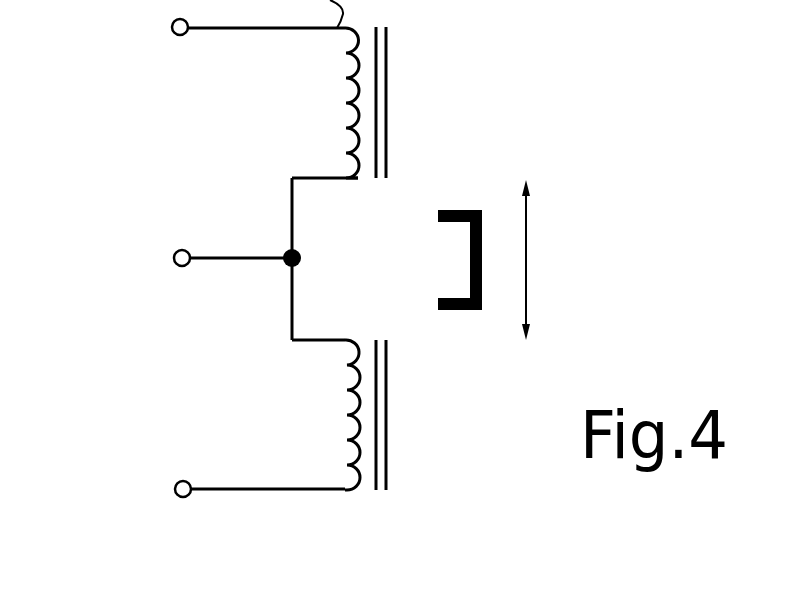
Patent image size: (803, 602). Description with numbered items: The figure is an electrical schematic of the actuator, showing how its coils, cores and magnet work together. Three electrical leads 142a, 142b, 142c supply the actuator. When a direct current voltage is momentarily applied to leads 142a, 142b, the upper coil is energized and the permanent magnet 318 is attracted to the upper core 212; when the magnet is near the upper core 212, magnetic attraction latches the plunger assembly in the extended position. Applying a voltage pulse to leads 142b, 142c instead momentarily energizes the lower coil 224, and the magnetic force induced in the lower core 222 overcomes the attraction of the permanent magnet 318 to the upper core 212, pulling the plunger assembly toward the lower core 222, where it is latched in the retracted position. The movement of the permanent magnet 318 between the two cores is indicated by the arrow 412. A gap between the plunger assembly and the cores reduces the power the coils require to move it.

The electrical lead 142a is at (172, 25).
The electrical lead 142b is at (172, 257).
The electrical lead 142c is at (175, 487).
The upper core 212 is at (387, 62).
The lower core 222 is at (387, 460).
The lower coil 224 is at (345, 491).
The permanent magnet 318 is at (460, 208).
The arrow 412 is at (526, 228).